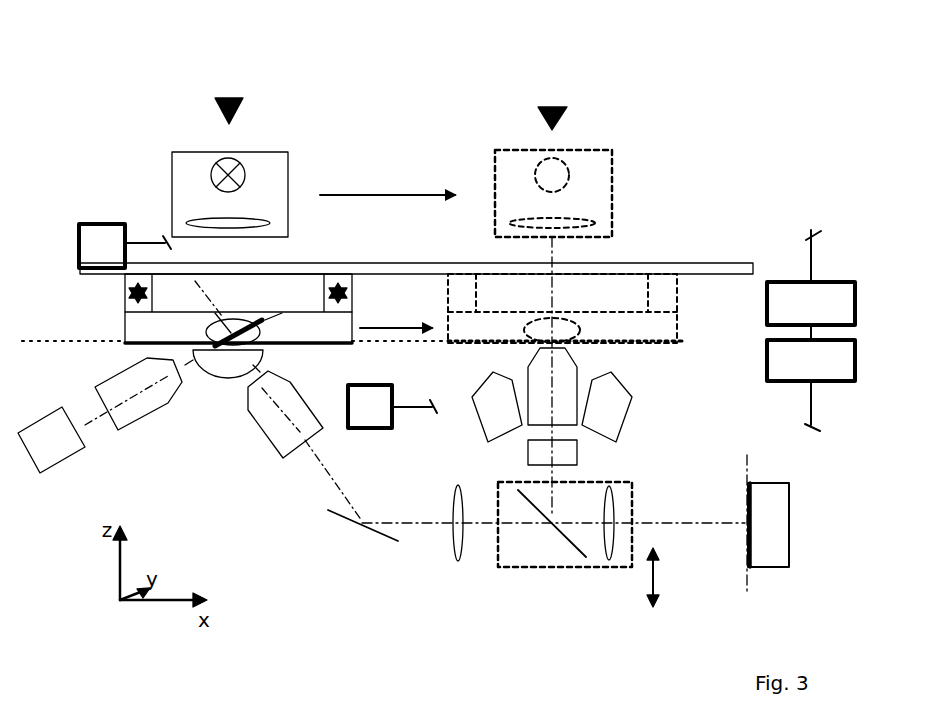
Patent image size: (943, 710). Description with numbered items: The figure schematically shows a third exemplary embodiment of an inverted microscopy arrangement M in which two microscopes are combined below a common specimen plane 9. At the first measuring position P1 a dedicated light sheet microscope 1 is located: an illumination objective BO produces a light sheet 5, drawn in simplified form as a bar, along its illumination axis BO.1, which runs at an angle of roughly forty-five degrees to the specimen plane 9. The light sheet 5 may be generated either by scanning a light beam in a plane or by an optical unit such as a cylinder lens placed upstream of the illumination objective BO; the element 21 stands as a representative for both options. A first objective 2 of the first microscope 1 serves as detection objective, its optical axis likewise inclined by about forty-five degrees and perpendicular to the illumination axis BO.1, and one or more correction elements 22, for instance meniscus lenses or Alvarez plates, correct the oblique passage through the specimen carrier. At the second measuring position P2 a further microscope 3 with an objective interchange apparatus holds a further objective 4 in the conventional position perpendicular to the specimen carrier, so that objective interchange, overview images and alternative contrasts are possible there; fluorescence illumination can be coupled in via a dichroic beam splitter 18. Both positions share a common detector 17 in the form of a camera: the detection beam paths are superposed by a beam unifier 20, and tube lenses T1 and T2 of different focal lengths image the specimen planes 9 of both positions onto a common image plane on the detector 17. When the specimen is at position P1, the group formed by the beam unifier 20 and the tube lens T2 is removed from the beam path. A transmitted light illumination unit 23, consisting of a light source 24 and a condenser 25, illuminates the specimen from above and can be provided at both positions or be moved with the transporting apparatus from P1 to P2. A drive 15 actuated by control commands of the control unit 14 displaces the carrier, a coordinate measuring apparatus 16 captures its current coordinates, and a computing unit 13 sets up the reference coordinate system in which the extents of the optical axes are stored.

The first microscope 1 is at (76, 385).
The first objective 2 is at (270, 432).
The further microscope 3 is at (662, 393).
The further objective 4 is at (572, 382).
The light sheet 5 is at (282, 345).
The specimen plane 9 is at (53, 340).
The computing unit 13 is at (811, 378).
The control unit 14 is at (811, 277).
The drive 15 is at (125, 246).
The coordinate measuring apparatus 16 is at (392, 406).
The detector 17 is at (790, 555).
The dichroic beam splitter 18 is at (578, 452).
The beam unifier 20 is at (568, 543).
The element 21 is at (48, 450).
The correction element 22 is at (230, 373).
The transmitted light illumination unit 23 is at (200, 150).
The light source 24 is at (247, 173).
The condenser 25 is at (270, 223).
The microscopy arrangement M is at (126, 194).
The illumination objective BO is at (157, 400).
The illumination axis BO.1 is at (100, 417).
The first measuring position P1 is at (231, 94).
The second measuring position P2 is at (553, 155).
The tube lens T1 is at (462, 553).
The tube lens T2 is at (613, 543).